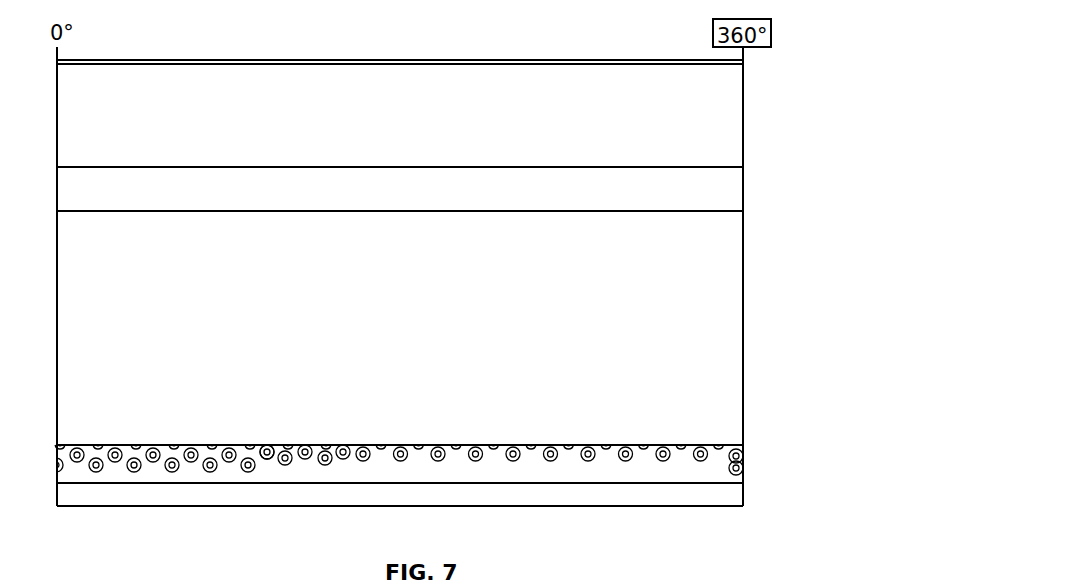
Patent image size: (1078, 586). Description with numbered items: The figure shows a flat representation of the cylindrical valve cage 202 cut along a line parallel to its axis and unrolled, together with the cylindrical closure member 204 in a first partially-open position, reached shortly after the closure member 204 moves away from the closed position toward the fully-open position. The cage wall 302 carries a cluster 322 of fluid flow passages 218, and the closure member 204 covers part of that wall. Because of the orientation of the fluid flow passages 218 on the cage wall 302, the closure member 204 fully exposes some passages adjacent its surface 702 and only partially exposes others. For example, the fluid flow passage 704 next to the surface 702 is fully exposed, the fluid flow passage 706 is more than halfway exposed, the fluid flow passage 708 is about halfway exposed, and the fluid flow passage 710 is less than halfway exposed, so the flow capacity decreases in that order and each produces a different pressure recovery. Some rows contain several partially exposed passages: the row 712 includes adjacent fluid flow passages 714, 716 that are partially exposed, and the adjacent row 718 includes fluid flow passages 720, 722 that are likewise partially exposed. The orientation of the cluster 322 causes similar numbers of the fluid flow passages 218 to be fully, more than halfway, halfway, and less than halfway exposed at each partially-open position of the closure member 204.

The valve cage 202 is at (752, 511).
The closure member 204 is at (732, 277).
The fluid flow passages 218 is at (555, 445).
The cage wall 302 is at (647, 507).
The cluster 322 is at (72, 506).
The surface 702 is at (640, 445).
The fluid flow passage 704 is at (153, 457).
The fluid flow passage 706 is at (96, 445).
The fluid flow passage 708 is at (133, 467).
The fluid flow passage 710 is at (172, 445).
The row 712 is at (240, 470).
The fluid flow passage 714 is at (264, 445).
The fluid flow passage 716 is at (290, 442).
The row 718 is at (268, 464).
The fluid flow passage 720 is at (306, 445).
The fluid flow passage 722 is at (330, 443).